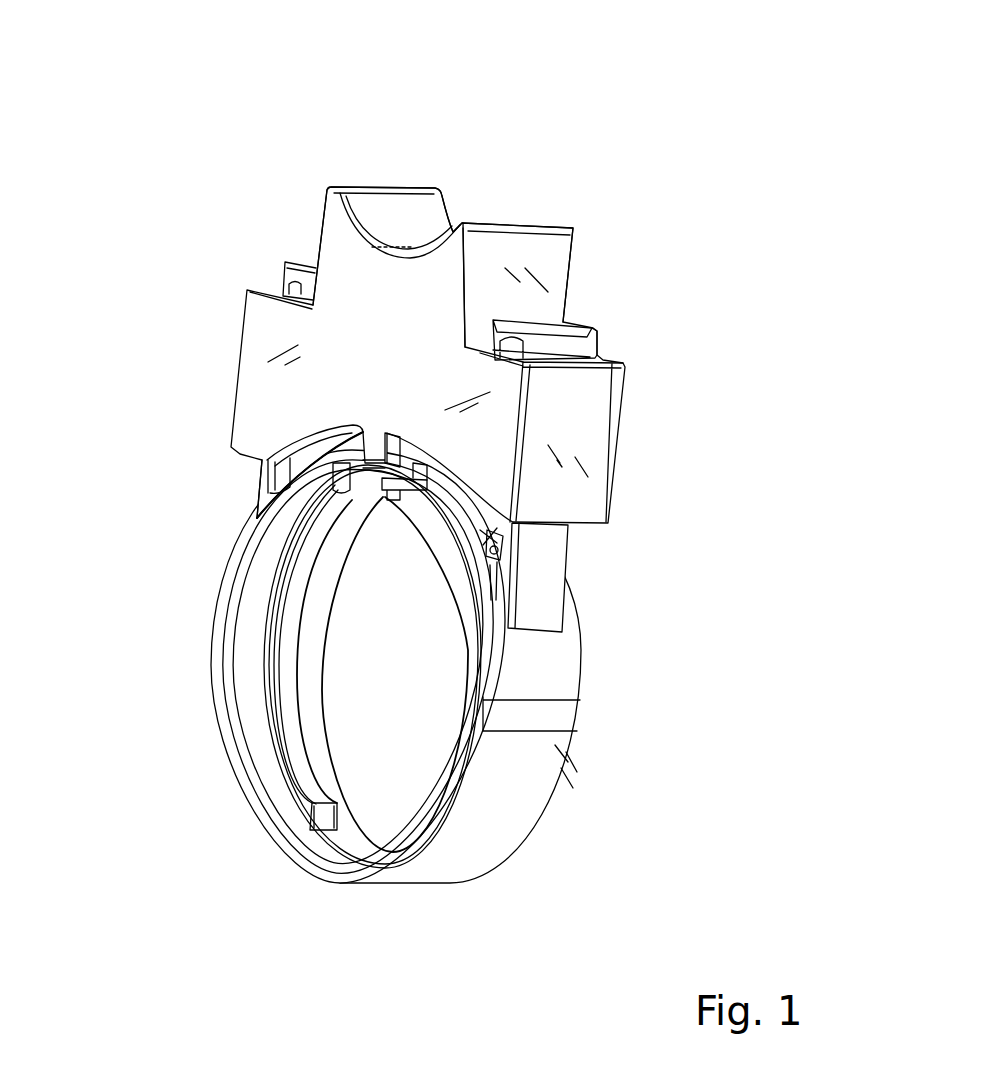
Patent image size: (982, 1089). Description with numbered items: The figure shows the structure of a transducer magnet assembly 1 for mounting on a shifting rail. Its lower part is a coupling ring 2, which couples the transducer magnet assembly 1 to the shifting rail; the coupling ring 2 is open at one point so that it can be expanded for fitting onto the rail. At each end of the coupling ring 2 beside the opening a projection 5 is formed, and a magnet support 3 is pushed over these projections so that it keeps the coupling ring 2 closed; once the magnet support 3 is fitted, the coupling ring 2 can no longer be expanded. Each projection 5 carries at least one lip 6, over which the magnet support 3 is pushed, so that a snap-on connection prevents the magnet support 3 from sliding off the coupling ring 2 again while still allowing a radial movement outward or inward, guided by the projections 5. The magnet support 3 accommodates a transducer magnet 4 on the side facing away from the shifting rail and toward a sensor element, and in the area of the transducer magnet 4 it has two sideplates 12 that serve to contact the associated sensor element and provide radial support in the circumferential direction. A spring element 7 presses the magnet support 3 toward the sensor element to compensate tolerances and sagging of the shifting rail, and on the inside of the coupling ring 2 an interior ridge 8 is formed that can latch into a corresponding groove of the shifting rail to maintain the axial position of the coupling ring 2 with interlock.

The transducer magnet assembly 1 is at (570, 181).
The coupling ring 2 is at (238, 563).
The magnet support 3 is at (485, 432).
The transducer magnet 4 is at (426, 250).
The projection 5 is at (256, 472).
The lip 6 is at (285, 263).
The spring element 7 is at (373, 520).
The interior ridge 8 is at (292, 684).
The sideplates 12 is at (385, 218).